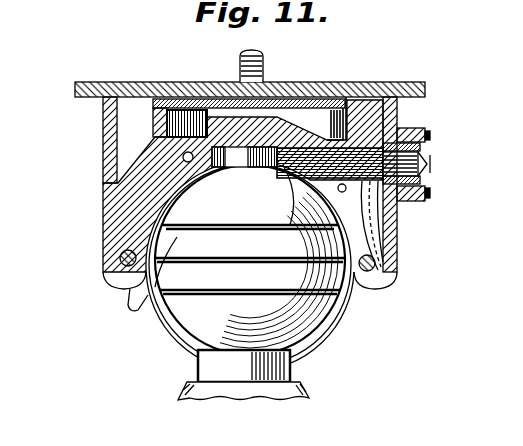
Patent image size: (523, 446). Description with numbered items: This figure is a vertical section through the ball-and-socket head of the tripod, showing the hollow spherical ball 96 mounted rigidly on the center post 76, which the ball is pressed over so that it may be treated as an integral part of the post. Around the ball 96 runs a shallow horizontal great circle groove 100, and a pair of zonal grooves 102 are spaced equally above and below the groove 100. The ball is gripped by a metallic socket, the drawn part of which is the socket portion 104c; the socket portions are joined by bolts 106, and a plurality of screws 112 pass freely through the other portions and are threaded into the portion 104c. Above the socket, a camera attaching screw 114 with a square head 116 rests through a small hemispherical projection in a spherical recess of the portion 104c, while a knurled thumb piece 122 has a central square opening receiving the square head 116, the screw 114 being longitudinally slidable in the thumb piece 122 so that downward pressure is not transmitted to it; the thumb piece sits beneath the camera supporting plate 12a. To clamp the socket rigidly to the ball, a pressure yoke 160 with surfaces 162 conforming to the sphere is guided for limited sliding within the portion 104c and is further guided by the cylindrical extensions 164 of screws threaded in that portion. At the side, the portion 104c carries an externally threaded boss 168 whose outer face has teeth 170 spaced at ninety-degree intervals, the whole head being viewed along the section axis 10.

The axis line 10 is at (150, 110).
The mounting plate 12a is at (125, 83).
The camera attaching screw 114 is at (240, 71).
The square head 116 is at (267, 112).
The knurled thumb piece 122 is at (153, 125).
The screws 112 is at (187, 152).
The pressure yoke 160 is at (355, 153).
The externally threaded boss 168 is at (428, 128).
The teeth 170 is at (428, 168).
The socket portion 104c is at (397, 213).
The cylindrical extensions 164 is at (398, 232).
The bolts 106 is at (376, 265).
The great circle groove 100 is at (200, 346).
The hollow spherical ball 96 is at (330, 322).
The surfaces 162 is at (290, 222).
The zonal grooves 102 is at (151, 300).
The center post 76 is at (290, 366).